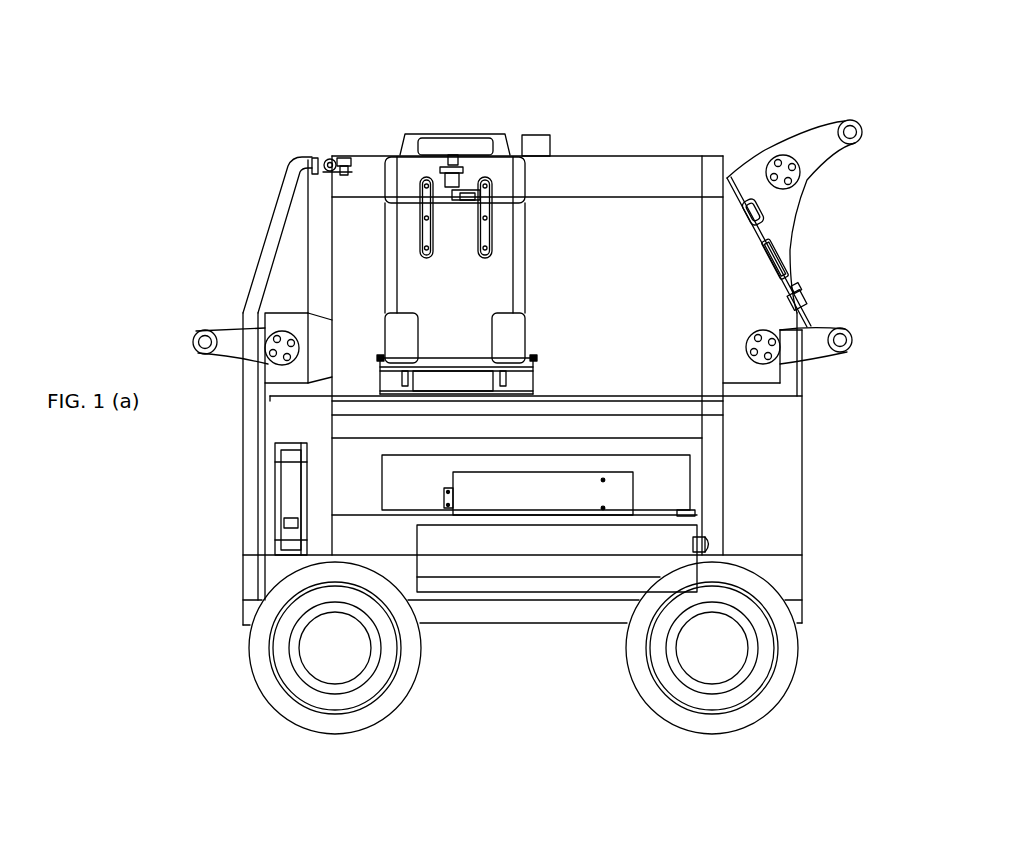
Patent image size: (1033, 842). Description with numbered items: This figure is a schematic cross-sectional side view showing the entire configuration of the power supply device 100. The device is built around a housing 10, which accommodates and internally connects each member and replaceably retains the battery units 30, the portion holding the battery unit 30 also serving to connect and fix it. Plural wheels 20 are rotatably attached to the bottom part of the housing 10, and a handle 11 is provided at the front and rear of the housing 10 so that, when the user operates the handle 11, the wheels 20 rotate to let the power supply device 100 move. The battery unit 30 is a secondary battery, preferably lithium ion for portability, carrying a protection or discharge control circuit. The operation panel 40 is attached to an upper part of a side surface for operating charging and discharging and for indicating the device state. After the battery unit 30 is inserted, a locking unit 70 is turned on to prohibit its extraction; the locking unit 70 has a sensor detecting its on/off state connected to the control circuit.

The power supply device 100 is at (553, 777).
The housing 10 is at (808, 502).
The handle 11 is at (823, 152).
The wheels 20 is at (778, 655).
The battery unit 30 is at (456, 132).
The operation panel 40 is at (782, 254).
The locking unit 70 is at (542, 128).